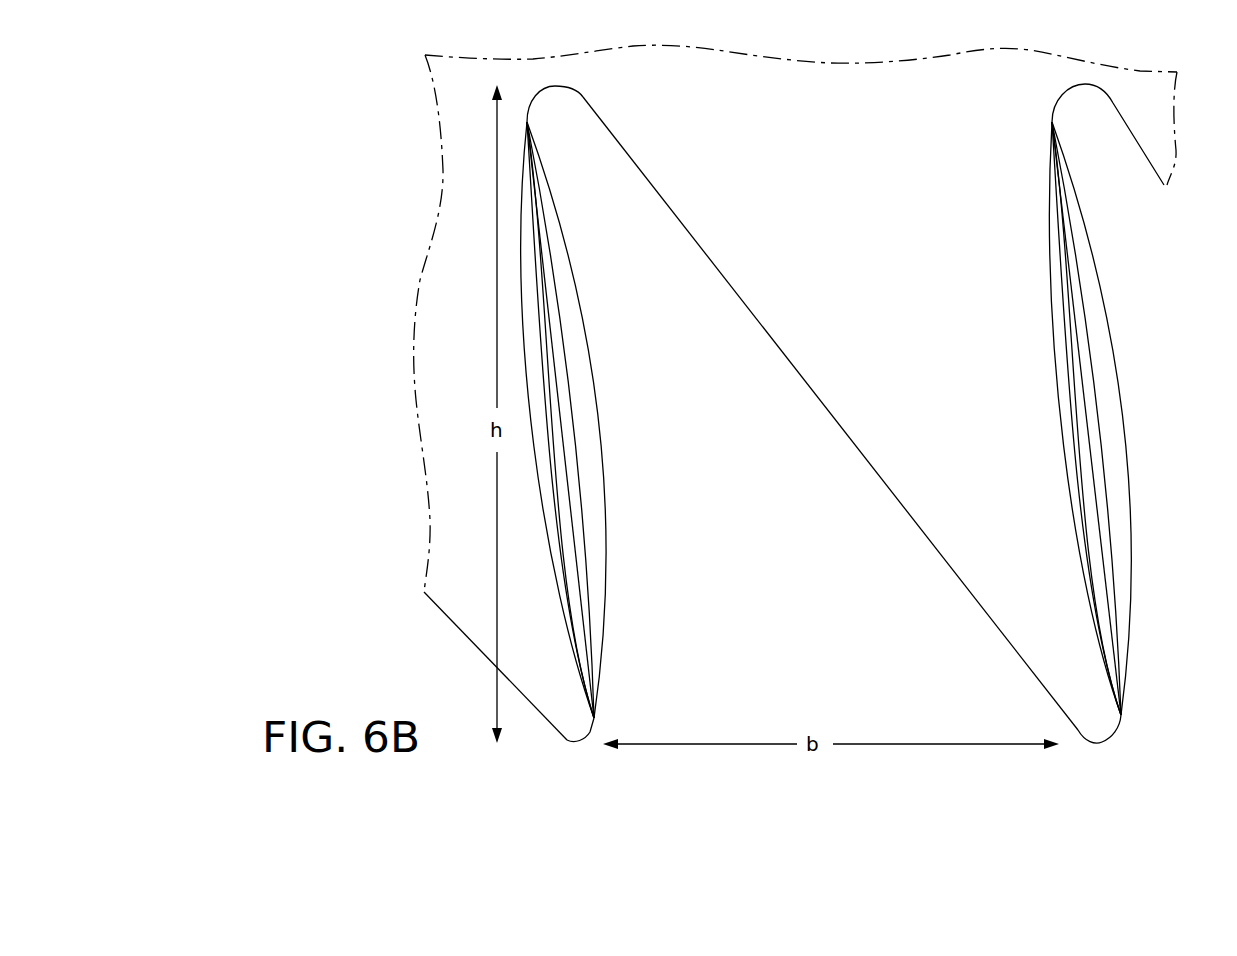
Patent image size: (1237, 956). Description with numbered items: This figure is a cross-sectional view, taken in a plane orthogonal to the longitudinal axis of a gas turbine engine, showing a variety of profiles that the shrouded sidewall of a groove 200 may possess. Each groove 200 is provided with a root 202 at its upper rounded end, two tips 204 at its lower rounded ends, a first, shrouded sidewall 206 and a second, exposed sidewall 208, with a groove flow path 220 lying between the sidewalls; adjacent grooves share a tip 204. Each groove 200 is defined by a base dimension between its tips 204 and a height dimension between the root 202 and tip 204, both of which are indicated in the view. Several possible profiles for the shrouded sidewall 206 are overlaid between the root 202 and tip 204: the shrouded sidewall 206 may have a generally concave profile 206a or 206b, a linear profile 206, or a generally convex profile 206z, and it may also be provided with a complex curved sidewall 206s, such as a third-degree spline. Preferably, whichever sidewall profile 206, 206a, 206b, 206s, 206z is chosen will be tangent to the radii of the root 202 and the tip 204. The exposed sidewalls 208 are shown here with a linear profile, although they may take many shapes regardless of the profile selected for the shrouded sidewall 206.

The groove 200 is at (408, 157).
The root 202 is at (576, 93).
The tip 204 is at (574, 746).
The shrouded sidewall 206 is at (588, 597).
The generally concave profile 206a is at (522, 273).
The generally concave profile 206b is at (546, 338).
The complex curved sidewall 206s is at (560, 543).
The generally convex profile 206z is at (603, 476).
The exposed sidewall 208 is at (483, 657).
The groove flow path 220 is at (768, 509).